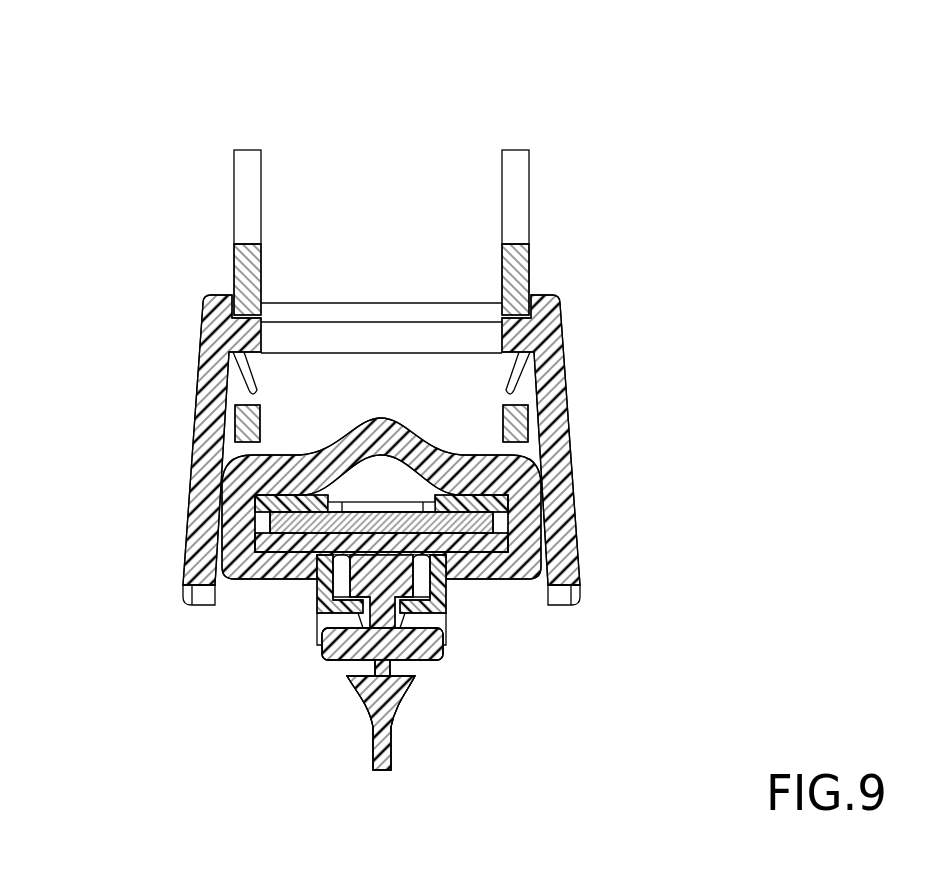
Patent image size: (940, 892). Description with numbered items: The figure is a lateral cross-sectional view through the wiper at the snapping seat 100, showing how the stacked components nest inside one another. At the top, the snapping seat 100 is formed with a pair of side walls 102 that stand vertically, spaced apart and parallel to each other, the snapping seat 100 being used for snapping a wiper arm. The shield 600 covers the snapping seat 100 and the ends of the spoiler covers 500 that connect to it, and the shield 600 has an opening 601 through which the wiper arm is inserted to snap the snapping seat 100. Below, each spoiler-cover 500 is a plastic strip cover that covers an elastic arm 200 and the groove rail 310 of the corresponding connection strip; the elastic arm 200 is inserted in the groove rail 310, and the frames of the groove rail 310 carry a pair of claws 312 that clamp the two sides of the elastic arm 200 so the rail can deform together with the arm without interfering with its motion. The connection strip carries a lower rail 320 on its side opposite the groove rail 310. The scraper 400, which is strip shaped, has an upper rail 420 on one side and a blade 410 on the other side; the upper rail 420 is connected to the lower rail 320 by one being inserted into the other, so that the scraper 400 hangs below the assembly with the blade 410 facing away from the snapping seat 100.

The snapping seat 100 is at (548, 259).
The side walls 102 is at (521, 155).
The elastic arm 200 is at (403, 522).
The groove rail 310 is at (362, 483).
The claws 312 is at (310, 497).
The lower rail 320 is at (437, 593).
The scraper 400 is at (368, 703).
The blade 410 is at (393, 710).
The upper rail 420 is at (365, 585).
The spoiler-cover 500 is at (525, 520).
The shield 600 is at (570, 372).
The opening 601 is at (468, 233).